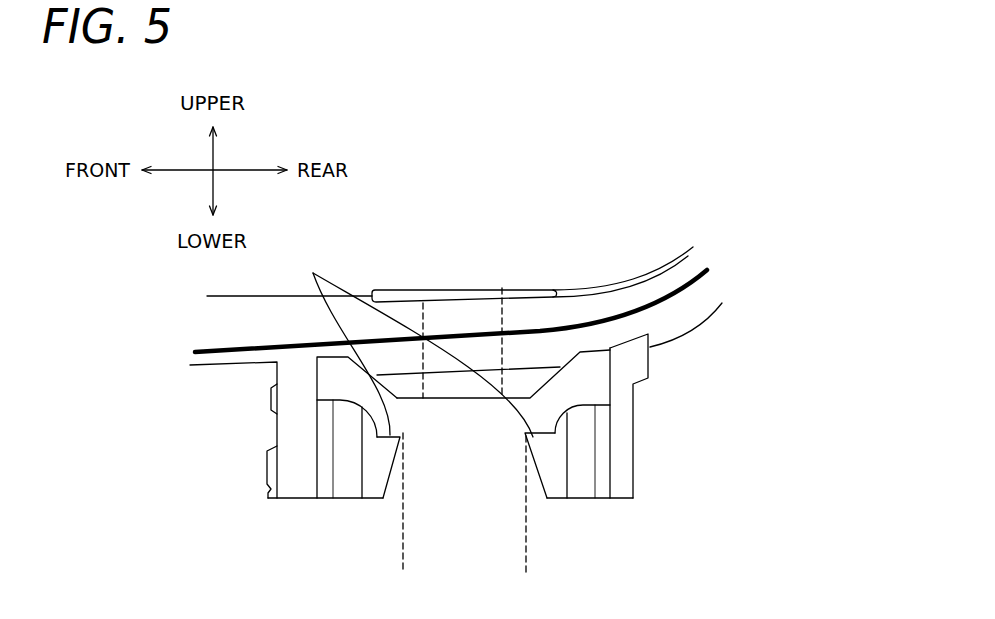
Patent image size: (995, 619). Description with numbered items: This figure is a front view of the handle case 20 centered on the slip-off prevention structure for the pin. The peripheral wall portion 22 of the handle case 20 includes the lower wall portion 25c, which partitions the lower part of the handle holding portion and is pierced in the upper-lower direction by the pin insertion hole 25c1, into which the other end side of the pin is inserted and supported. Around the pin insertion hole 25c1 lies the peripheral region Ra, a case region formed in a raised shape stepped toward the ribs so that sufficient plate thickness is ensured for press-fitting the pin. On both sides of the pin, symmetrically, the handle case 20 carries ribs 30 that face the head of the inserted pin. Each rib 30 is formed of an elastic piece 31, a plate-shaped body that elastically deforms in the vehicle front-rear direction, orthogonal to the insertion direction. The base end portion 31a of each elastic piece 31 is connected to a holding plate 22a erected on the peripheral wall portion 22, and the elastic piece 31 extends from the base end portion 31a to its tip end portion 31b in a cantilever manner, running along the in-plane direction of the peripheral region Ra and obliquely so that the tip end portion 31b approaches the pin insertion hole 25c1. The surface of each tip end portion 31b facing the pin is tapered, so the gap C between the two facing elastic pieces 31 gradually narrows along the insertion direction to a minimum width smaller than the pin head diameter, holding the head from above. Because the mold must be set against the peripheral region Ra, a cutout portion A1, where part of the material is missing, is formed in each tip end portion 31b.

The handle case 20 is at (672, 362).
The peripheral wall portion 22 is at (197, 367).
The holding plate 22a is at (270, 446).
The lower wall portion 25c is at (517, 290).
The pin insertion hole 25c1 is at (423, 303).
The rib 30 is at (467, 476).
The elastic piece 31 is at (338, 507).
The base end portion 31a is at (325, 462).
The tip end portion 31b is at (373, 490).
The peripheral region Ra is at (482, 406).
The cutout portion A1 is at (415, 341).
The gap C is at (526, 560).